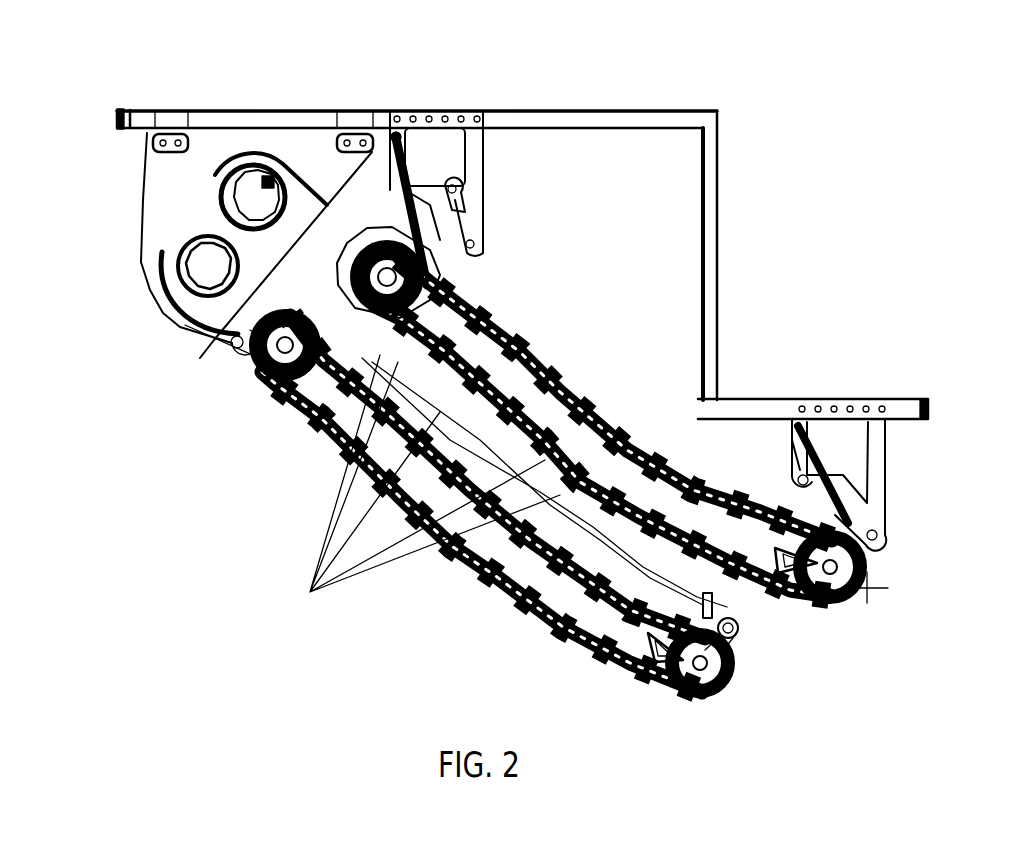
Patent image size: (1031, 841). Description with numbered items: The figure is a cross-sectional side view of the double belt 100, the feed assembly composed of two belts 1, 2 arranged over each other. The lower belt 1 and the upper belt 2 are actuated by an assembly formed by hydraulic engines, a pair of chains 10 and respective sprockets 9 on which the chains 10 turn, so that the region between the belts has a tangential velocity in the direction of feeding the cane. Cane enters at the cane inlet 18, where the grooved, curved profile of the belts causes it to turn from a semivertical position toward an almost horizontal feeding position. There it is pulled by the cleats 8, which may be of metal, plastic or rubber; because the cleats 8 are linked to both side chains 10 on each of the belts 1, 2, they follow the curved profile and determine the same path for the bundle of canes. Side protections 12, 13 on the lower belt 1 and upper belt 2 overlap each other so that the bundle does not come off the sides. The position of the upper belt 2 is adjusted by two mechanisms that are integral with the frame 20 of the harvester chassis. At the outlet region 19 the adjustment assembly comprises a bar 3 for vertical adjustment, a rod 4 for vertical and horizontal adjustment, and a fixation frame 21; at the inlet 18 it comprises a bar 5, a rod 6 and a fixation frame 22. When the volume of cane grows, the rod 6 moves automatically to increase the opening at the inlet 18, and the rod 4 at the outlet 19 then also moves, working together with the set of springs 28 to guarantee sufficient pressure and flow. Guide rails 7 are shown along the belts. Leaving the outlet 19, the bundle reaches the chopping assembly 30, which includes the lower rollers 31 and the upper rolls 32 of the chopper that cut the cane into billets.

The lower belt 1 is at (495, 550).
The upper belt 2 is at (576, 396).
The bar 3 is at (404, 222).
The rod 4 is at (466, 203).
The bar 5 is at (792, 462).
The rod 6 is at (873, 573).
The guide rail 7 is at (767, 557).
The cleats 8 is at (559, 370).
The sprockets 9 is at (300, 345).
The chains 10 is at (419, 487).
The side protection 12 is at (320, 385).
The side protection 13 is at (742, 603).
The cane inlet 18 is at (848, 682).
The outlet region 19 is at (312, 282).
The frame 20 is at (707, 112).
The fixation frame 21 is at (486, 140).
The fixation frame 22 is at (884, 482).
The set of springs 28 is at (393, 130).
The chopping assembly 30 is at (176, 174).
The lower rollers 31 is at (208, 266).
The upper rolls 32 is at (270, 180).
The double belt 100 is at (302, 750).